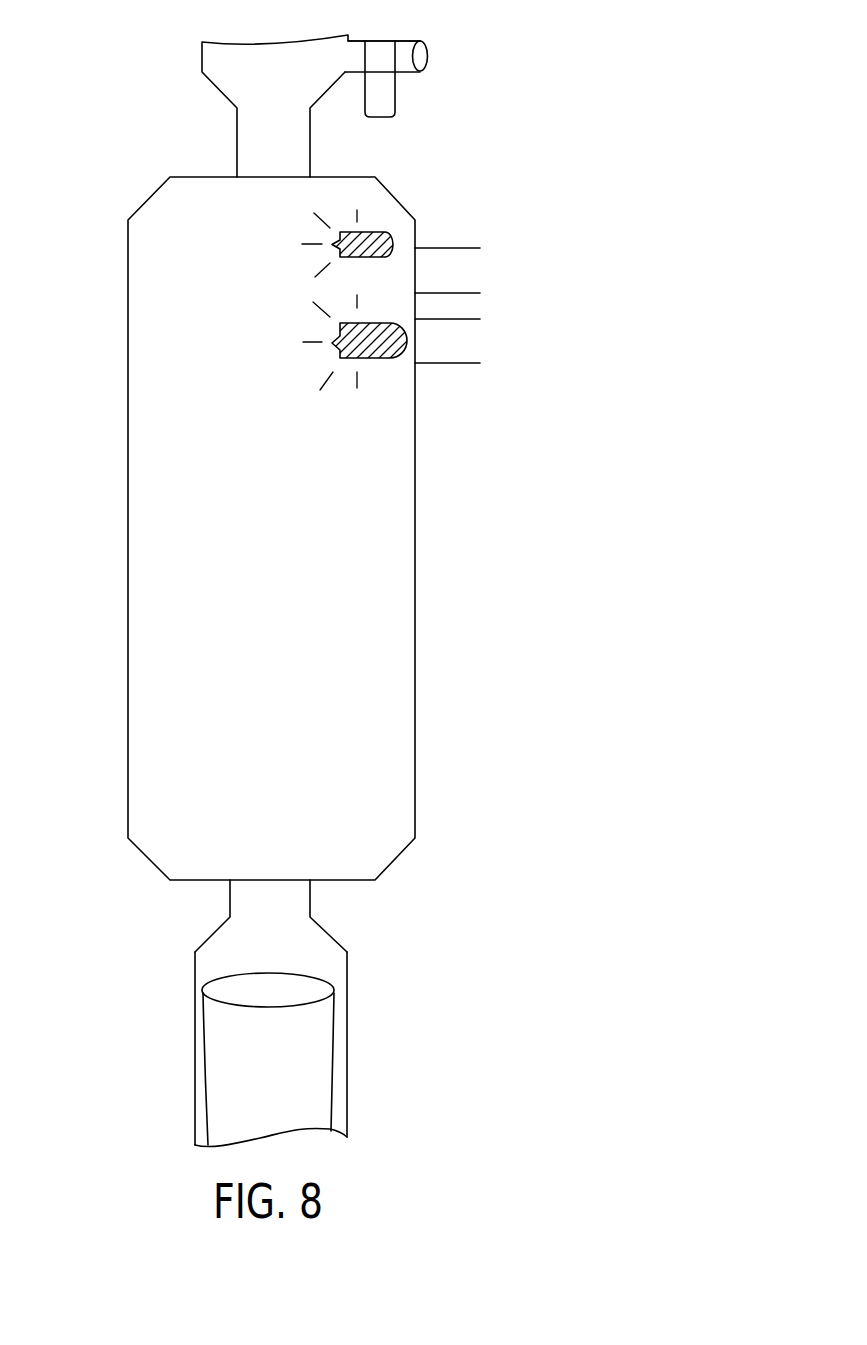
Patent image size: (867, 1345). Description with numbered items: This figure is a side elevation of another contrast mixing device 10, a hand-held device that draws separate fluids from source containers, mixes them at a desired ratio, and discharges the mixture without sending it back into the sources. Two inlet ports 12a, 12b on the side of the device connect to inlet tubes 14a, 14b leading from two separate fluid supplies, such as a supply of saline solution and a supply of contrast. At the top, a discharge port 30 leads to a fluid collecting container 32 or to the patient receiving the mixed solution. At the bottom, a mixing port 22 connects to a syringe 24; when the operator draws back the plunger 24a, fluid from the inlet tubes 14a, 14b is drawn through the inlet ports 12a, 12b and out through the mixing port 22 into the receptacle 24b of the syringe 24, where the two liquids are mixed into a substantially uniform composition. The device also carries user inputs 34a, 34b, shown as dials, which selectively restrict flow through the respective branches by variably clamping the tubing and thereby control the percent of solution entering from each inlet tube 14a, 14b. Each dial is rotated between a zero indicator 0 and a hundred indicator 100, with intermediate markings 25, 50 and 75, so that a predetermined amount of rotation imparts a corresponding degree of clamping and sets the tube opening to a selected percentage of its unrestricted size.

The contrast mixing device 10 is at (106, 543).
The inlet port 12a is at (415, 250).
The inlet port 12b is at (417, 342).
The inlet tube 14a is at (466, 248).
The inlet tube 14b is at (467, 363).
The mixing port 22 is at (270, 880).
The syringe 24 is at (285, 1037).
The plunger 24a is at (218, 1057).
The receptacle 24b is at (327, 951).
The discharge port 30 is at (260, 178).
The fluid collecting container 32 is at (230, 77).
The user input 34a is at (378, 231).
The user input 34b is at (391, 362).
The zero indicator 0 is at (357, 284).
The scale mark 25 is at (311, 290).
The scale mark 50 is at (298, 295).
The scale mark 75 is at (312, 297).
The hundred indicator 100 is at (357, 304).